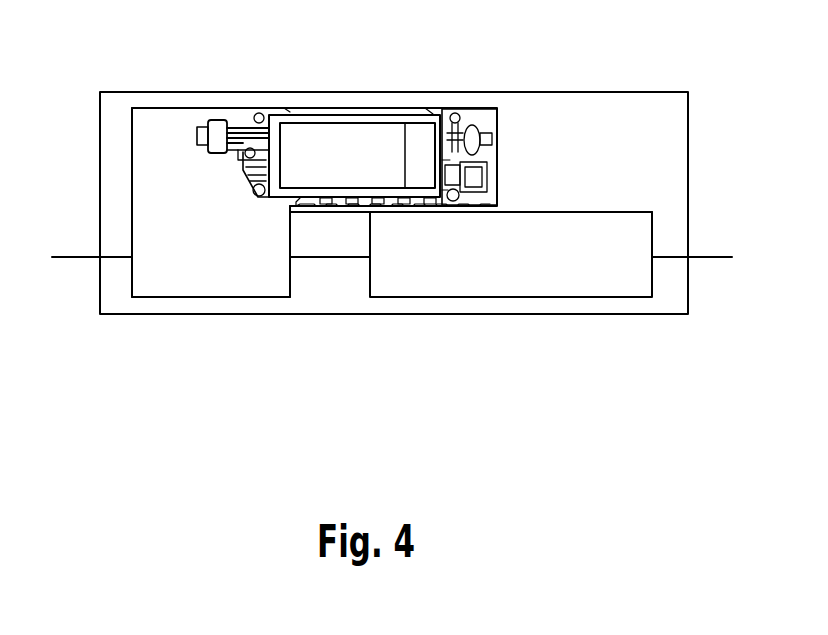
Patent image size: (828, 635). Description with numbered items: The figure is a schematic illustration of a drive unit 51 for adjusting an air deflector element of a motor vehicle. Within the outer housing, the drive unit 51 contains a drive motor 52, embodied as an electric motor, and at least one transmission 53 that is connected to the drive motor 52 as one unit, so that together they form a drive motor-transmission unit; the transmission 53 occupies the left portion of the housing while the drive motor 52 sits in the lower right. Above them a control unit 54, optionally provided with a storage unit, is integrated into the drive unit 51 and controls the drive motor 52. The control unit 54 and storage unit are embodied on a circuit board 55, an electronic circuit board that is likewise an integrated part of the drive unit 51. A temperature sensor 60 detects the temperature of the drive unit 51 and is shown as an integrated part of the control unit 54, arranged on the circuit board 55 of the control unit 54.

The drive unit 51 is at (338, 225).
The drive motor 52 is at (521, 258).
The transmission 53 is at (207, 260).
The control unit 54 is at (347, 152).
The circuit board 55 is at (236, 170).
The temperature sensor 60 is at (423, 152).